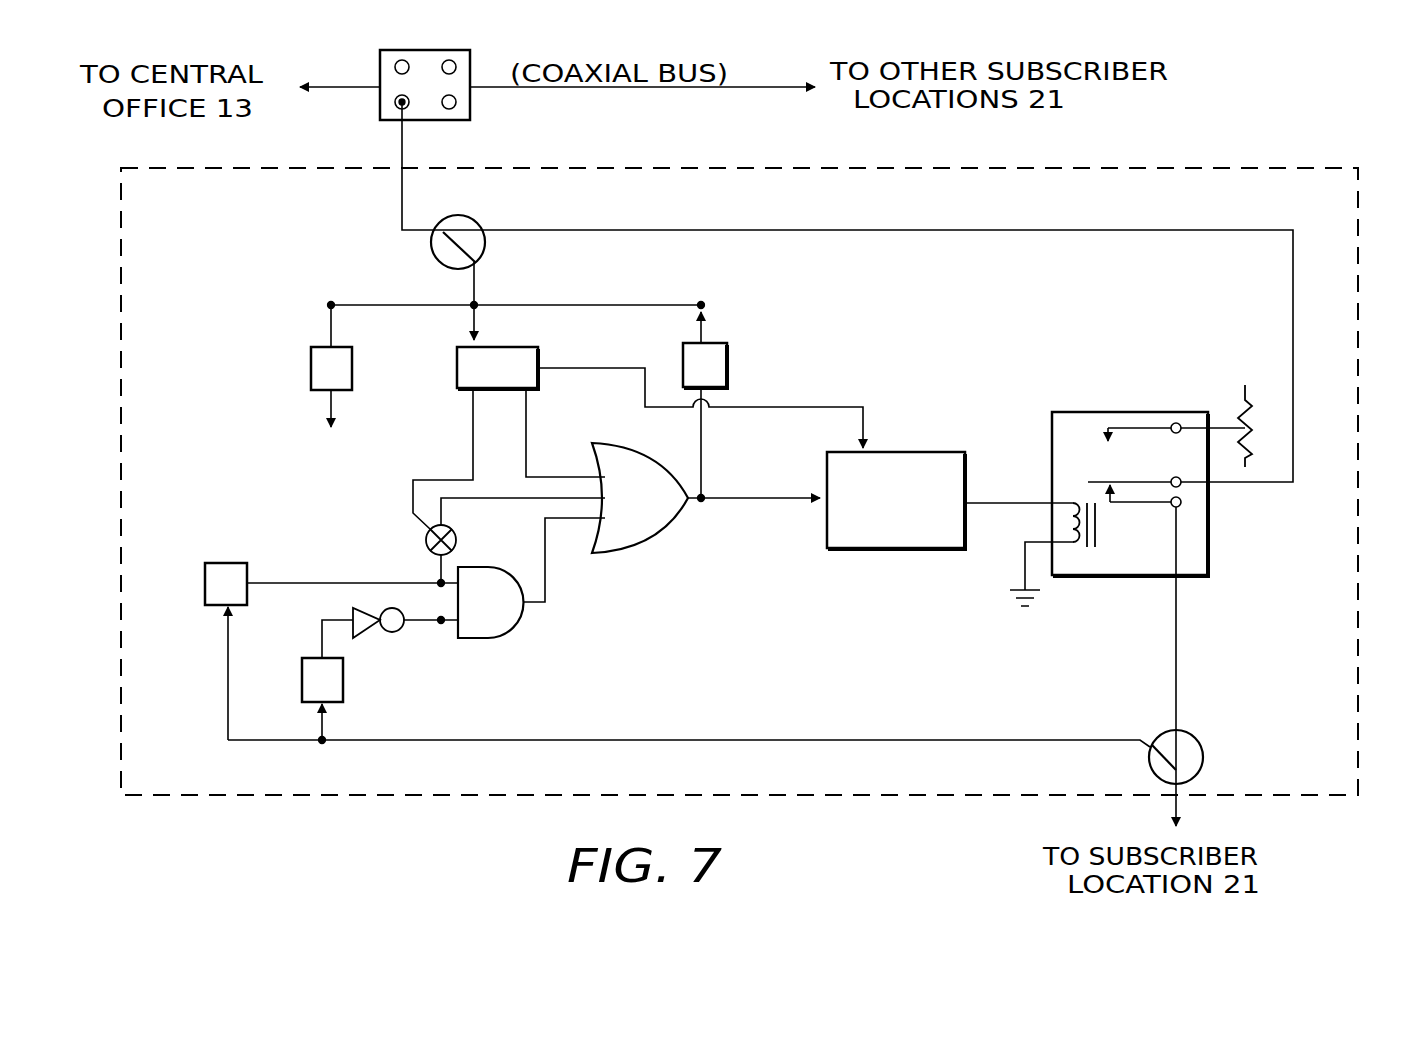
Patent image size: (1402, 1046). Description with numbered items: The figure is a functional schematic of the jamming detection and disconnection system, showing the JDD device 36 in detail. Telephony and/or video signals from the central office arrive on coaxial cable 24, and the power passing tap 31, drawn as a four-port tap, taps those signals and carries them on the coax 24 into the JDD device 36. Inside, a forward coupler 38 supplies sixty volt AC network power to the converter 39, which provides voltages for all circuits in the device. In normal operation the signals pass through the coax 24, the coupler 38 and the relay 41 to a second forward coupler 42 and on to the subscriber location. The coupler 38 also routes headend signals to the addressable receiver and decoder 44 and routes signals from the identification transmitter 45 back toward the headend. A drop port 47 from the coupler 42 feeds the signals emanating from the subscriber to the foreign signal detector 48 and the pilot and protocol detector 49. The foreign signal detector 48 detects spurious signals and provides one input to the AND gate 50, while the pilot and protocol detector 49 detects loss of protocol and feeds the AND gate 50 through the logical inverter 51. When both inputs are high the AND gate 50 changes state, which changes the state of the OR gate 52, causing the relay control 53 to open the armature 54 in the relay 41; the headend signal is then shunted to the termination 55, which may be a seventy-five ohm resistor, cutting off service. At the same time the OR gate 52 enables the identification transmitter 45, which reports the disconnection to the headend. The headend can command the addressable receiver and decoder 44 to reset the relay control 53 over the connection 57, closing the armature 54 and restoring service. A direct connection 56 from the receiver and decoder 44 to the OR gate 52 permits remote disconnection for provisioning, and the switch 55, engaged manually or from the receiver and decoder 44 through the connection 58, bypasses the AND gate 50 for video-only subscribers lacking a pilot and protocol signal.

The coaxial cable 24 is at (335, 86).
The power passing tap 31 is at (470, 63).
The JDD device 36 is at (708, 162).
The forward coupler 38 is at (470, 214).
The converter 39 is at (280, 395).
The addressable receiver and decoder 44 is at (497, 368).
The identification transmitter 45 is at (705, 405).
The connection 57 is at (812, 405).
The connection 58 is at (470, 457).
The direct connection 56 is at (528, 462).
The termination / switch 55 is at (425, 536).
The OR gate 52 is at (662, 532).
The AND gate 50 is at (520, 617).
The logical inverter 51 is at (373, 627).
The foreign signal detector 48 is at (331, 651).
The pilot and protocol detector 49 is at (327, 682).
The drop port 47 is at (942, 742).
The relay control 53 is at (908, 450).
The relay 41 is at (1105, 410).
The armature 54 is at (1137, 482).
The forward coupler 42 is at (1187, 728).